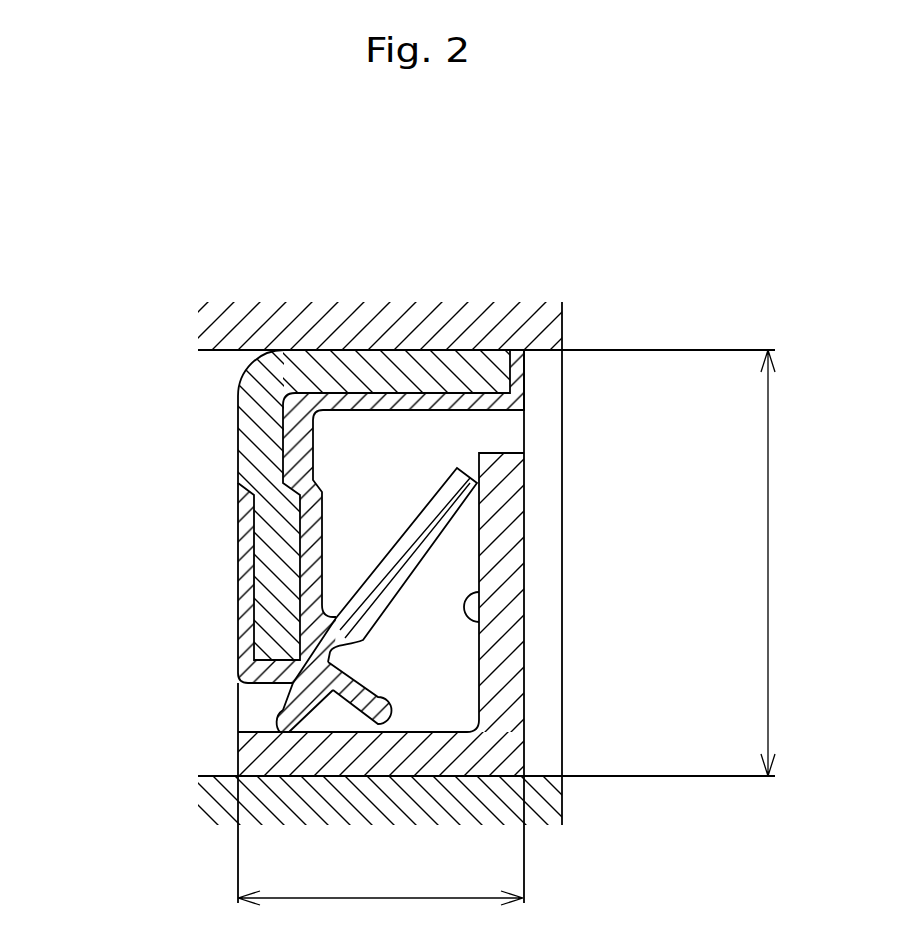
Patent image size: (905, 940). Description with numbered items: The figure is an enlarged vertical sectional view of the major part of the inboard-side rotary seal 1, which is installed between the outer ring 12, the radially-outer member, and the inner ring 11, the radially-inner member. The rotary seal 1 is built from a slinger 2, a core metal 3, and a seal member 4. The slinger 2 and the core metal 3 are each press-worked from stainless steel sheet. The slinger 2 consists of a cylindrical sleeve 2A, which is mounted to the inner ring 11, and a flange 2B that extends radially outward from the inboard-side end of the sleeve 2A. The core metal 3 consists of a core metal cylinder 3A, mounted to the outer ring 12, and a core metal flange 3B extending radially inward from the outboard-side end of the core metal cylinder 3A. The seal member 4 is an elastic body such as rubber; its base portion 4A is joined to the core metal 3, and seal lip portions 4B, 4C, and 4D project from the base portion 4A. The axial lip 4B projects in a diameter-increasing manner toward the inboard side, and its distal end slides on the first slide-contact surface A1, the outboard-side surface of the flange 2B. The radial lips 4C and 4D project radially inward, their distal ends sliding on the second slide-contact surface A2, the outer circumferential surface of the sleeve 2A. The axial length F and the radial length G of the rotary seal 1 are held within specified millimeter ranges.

The rotary seal 1 is at (602, 422).
The slinger 2 is at (471, 678).
The sleeve 2A is at (417, 727).
The flange 2B is at (508, 555).
The core metal 3 is at (290, 486).
The core metal cylinder 3A is at (343, 352).
The core metal flange 3B is at (248, 450).
The seal member 4 is at (368, 541).
The base portion 4A is at (238, 550).
The axial lip 4B is at (418, 540).
The radial lip 4C is at (395, 680).
The radial lip 4D is at (282, 712).
The inner ring 11 is at (515, 802).
The outer ring 12 is at (524, 324).
The first slide-contact surface A1 is at (480, 623).
The second slide-contact surface A2 is at (258, 732).
The length in the axial direction F is at (380, 885).
The length in the radial direction G is at (759, 563).